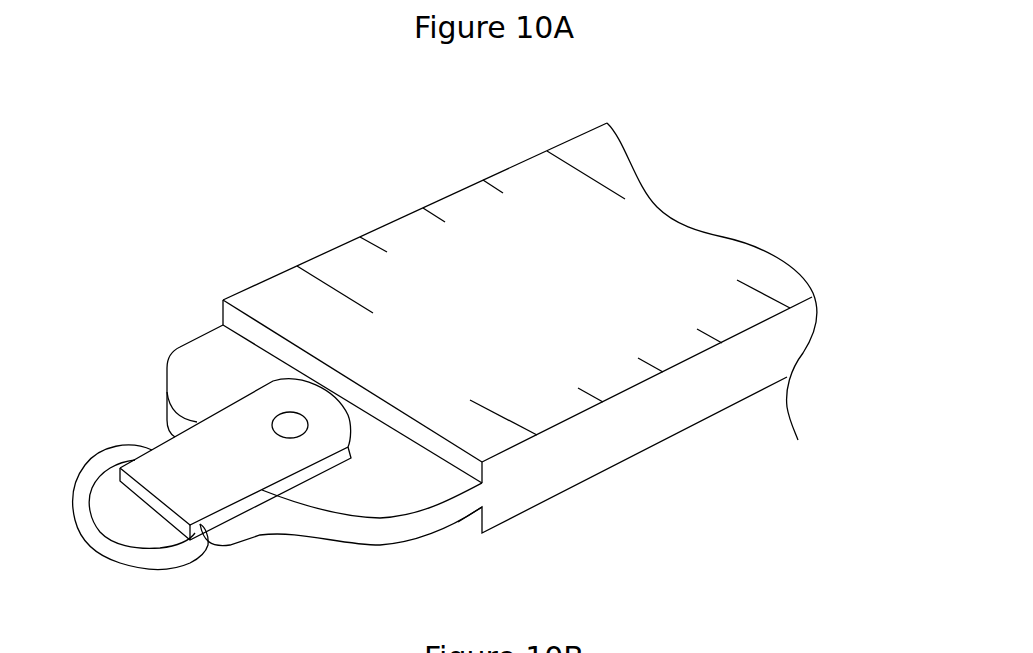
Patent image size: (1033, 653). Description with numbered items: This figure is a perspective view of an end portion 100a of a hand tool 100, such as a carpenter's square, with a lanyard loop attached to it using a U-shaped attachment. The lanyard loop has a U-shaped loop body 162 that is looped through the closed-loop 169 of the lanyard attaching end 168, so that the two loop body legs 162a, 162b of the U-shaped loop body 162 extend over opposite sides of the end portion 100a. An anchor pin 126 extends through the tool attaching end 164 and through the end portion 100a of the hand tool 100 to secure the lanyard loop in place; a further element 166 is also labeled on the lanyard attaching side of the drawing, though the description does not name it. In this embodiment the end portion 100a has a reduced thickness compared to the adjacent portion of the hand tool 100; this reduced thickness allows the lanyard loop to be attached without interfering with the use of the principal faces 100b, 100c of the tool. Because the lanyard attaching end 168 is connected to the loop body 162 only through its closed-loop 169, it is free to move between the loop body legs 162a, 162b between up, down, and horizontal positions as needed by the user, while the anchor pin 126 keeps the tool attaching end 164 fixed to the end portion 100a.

The hand tool 100 is at (433, 200).
The end portion 100a is at (377, 488).
The principal face 100b is at (656, 252).
The principal face 100c is at (697, 430).
The anchor pin 126 is at (300, 418).
The U-shaped loop body 162 is at (259, 429).
The loop body leg 162a is at (237, 477).
The loop body leg 162b is at (268, 518).
The tool attaching end 164 is at (295, 397).
The ring attachment 166 is at (200, 577).
The lanyard attaching end 168 is at (125, 555).
The closed-loop 169 is at (110, 500).